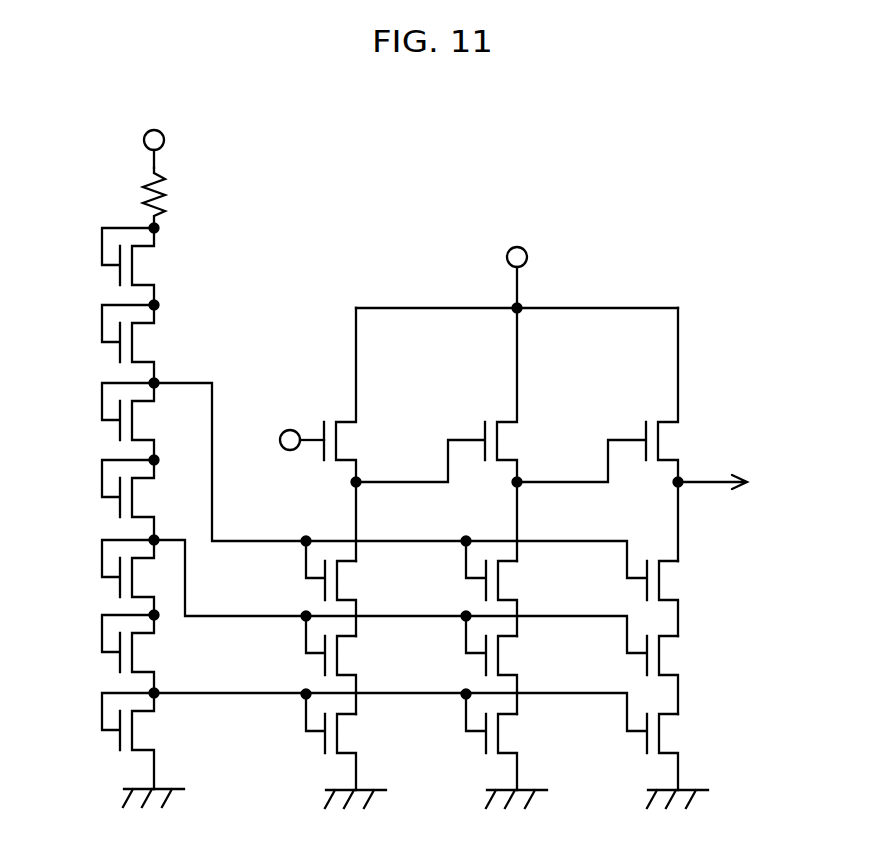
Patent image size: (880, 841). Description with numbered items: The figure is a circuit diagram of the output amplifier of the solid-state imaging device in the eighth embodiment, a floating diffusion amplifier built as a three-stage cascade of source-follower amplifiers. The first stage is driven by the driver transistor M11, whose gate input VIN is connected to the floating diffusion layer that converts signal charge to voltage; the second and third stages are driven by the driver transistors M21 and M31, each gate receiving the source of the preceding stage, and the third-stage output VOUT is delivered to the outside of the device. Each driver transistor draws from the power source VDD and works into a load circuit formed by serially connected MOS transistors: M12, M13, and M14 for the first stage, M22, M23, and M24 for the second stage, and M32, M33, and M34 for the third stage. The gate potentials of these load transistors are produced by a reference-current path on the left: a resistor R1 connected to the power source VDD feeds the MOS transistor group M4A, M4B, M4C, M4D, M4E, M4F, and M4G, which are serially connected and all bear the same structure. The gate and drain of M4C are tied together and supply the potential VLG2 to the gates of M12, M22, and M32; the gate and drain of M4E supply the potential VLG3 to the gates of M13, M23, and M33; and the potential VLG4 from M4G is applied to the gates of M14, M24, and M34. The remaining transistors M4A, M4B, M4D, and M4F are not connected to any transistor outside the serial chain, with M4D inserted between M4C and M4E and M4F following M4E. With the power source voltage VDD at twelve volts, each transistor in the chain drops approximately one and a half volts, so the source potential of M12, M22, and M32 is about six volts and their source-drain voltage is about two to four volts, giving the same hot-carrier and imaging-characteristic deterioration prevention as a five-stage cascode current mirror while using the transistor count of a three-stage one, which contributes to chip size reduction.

The resistor R1 is at (132, 198).
The MOS transistor M4A is at (95, 265).
The MOS transistor M4B is at (95, 342).
The MOS transistor M4C is at (95, 420).
The MOS transistor M4D is at (95, 498).
The MOS transistor M4E is at (95, 576).
The MOS transistor M4F is at (95, 652).
The MOS transistor M4G is at (108, 748).
The first-stage driver transistor M11 is at (370, 434).
The MOS transistor M12 is at (361, 588).
The MOS transistor M13 is at (361, 665).
The MOS transistor M14 is at (361, 751).
The driver transistor M21 is at (466, 434).
The MOS transistor M22 is at (521, 588).
The MOS transistor M23 is at (521, 665).
The MOS transistor M24 is at (521, 751).
The driver transistor M31 is at (628, 434).
The MOS transistor M32 is at (694, 598).
The MOS transistor M33 is at (694, 675).
The MOS transistor M34 is at (694, 761).
The potential VLG2 is at (400, 466).
The potential VLG3 is at (400, 596).
The potential VLG4 is at (400, 697).
The power source VDD is at (366, 216).
The gate input VIN is at (296, 424).
The output VOUT is at (749, 482).